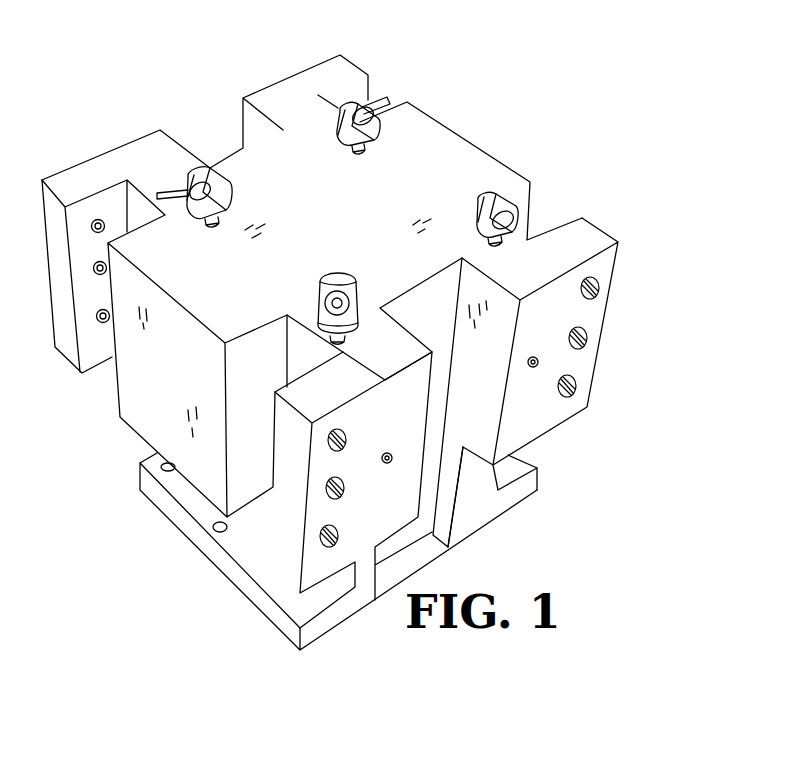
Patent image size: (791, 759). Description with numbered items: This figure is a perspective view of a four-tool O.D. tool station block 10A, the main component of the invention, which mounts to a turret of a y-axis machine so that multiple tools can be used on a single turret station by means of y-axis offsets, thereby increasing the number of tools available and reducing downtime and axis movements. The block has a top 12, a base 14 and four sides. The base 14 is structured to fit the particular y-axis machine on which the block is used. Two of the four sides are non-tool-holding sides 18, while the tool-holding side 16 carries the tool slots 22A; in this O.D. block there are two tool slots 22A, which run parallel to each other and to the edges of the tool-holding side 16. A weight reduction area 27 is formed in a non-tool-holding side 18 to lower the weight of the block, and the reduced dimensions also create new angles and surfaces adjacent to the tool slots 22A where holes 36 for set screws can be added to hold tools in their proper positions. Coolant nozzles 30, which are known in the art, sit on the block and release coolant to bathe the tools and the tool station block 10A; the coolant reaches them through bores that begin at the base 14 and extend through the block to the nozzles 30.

The O.D. tool station block 10A is at (474, 66).
The top 12 is at (467, 165).
The base 14 is at (495, 515).
The tool-holding side 16 is at (143, 443).
The non-tool-holding side 18 is at (580, 362).
The tool slot 22A is at (377, 92).
The weight reduction area 27 is at (553, 445).
The coolant nozzle 30 is at (192, 182).
The hole for set screw 36 is at (598, 291).